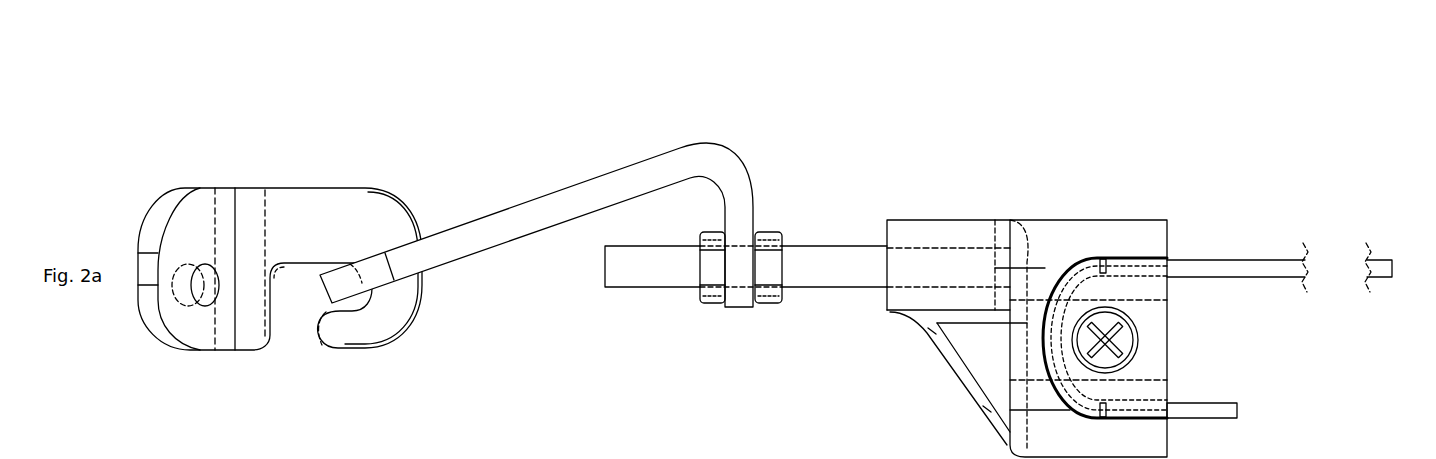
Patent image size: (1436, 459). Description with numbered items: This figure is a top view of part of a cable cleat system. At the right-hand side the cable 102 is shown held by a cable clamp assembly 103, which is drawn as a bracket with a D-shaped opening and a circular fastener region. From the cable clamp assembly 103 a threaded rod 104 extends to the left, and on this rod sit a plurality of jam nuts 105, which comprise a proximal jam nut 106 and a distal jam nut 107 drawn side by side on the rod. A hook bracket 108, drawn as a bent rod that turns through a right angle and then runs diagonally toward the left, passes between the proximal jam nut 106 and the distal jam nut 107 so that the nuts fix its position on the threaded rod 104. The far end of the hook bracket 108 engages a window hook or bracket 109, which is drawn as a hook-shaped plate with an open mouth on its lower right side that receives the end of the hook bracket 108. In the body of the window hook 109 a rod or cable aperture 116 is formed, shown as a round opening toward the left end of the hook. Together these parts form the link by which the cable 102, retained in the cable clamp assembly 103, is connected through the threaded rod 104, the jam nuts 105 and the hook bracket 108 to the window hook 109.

The cable 102 is at (1383, 269).
The cable clamp assembly 103 is at (1147, 318).
The threaded rod 104 is at (813, 260).
The plurality of jam nuts 105 is at (739, 324).
The proximal jam nut 106 is at (737, 345).
The distal jam nut 107 is at (767, 298).
The hook bracket 108 is at (505, 233).
The window hook 109 is at (280, 191).
The rod or cable aperture 116 is at (203, 284).